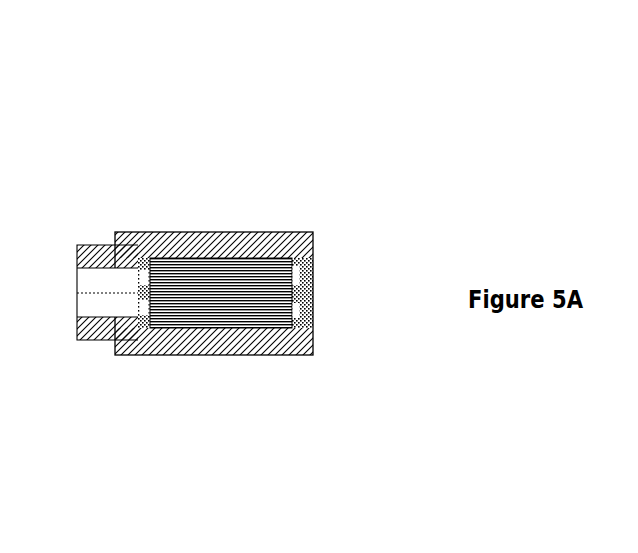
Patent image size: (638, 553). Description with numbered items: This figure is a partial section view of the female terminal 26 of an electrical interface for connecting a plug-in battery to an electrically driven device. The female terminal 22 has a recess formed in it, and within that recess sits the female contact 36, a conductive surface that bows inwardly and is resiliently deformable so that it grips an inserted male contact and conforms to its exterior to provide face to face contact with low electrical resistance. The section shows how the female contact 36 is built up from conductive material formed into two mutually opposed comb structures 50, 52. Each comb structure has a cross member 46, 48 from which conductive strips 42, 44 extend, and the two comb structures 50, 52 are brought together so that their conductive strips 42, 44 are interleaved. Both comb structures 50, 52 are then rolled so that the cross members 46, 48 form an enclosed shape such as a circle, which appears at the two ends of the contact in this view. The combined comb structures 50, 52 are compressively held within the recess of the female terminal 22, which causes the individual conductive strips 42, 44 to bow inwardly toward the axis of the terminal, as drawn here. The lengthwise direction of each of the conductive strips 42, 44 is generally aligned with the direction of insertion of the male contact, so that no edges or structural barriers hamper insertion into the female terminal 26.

The female terminal 26 is at (200, 216).
The female terminal 22 is at (99, 255).
The female contact 36 is at (185, 278).
The cross member 46 is at (150, 307).
The cross member 48 is at (302, 325).
The conductive strips 42 is at (170, 342).
The conductive strips 44 is at (170, 342).
The comb structure 50 is at (258, 360).
The comb structure 52 is at (258, 360).